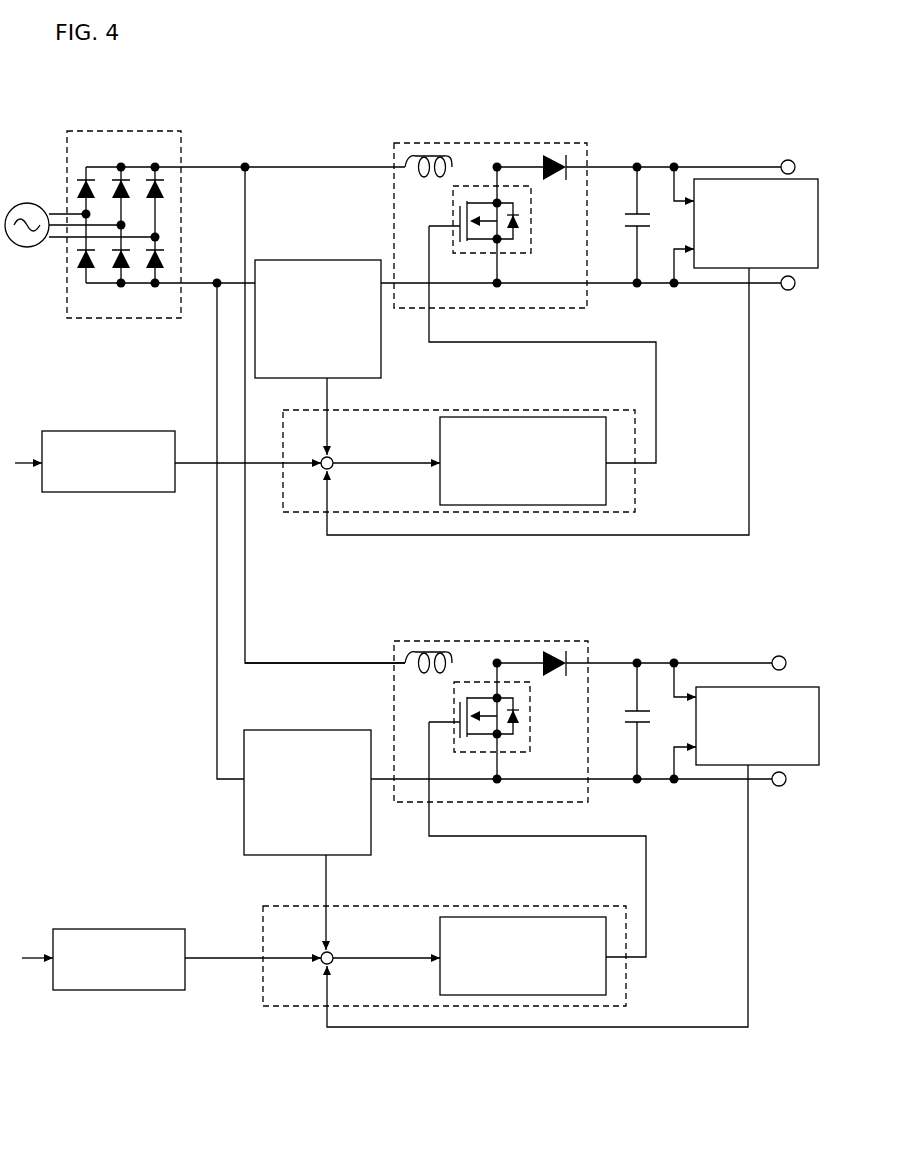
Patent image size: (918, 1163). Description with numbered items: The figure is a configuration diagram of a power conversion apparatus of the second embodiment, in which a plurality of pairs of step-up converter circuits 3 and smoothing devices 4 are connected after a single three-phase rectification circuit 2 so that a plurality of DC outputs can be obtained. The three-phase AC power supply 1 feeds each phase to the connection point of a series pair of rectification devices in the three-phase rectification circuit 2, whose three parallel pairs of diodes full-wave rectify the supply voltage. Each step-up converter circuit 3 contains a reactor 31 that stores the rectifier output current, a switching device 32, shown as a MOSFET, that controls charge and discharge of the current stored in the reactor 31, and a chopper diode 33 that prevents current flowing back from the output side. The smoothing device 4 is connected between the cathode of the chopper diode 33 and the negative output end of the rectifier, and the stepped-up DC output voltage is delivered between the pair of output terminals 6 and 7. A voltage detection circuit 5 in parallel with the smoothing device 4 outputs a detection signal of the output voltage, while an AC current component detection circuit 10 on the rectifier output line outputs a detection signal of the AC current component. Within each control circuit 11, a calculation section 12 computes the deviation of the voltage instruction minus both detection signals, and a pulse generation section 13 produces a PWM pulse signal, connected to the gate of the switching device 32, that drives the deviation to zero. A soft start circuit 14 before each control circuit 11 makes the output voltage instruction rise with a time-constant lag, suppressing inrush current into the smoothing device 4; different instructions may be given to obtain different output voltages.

The three-phase AC power supply 1 is at (21, 202).
The three-phase rectification circuit 2 is at (124, 131).
The step-up converter circuit 3 is at (455, 143).
The smoothing device 4 is at (630, 207).
The voltage detection circuit 5 is at (712, 178).
The output terminal 6 is at (785, 159).
The output terminal 7 is at (789, 291).
The AC current component detection circuit 10 is at (312, 258).
The control circuit 11 is at (397, 410).
The calculation section 12 is at (336, 467).
The pulse generation section 13 is at (518, 417).
The soft start circuit 14 is at (92, 431).
The reactor 31 is at (412, 153).
The switching device 32 is at (510, 186).
The chopper diode 33 is at (551, 153).